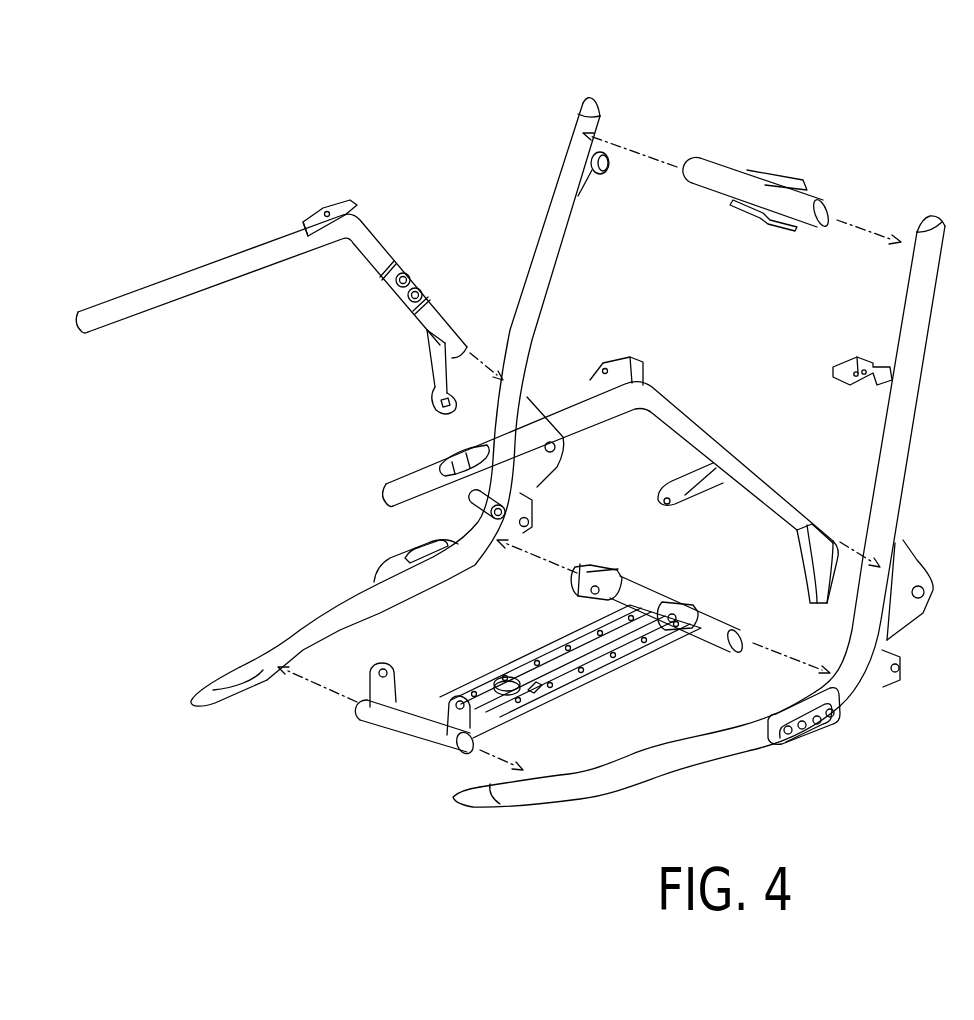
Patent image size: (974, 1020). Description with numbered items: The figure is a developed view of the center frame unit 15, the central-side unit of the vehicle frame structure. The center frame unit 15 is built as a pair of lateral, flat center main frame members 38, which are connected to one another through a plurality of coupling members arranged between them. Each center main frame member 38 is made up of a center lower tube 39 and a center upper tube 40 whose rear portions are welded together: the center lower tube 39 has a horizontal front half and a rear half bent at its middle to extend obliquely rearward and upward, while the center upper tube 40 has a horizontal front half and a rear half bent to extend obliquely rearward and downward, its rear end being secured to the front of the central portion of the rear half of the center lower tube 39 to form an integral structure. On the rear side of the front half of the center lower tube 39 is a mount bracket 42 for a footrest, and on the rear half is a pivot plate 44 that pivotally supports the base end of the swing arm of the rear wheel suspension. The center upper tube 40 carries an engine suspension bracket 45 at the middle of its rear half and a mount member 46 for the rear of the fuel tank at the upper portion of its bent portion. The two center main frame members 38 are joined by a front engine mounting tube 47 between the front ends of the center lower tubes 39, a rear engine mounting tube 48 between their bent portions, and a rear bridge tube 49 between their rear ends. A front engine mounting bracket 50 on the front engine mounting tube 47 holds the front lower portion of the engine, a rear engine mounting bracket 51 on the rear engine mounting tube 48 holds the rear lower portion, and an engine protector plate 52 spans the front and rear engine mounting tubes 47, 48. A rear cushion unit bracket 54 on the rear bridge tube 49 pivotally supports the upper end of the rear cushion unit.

The center frame unit 15 is at (813, 117).
The center main frame member 38 is at (352, 374).
The center lower tube 39 is at (507, 420).
The center upper tube 40 is at (426, 323).
The mount bracket 42 is at (407, 557).
The pivot plate 44 is at (550, 460).
The engine suspension bracket 45 is at (697, 490).
The mount member 46 is at (337, 203).
The front engine mounting tube 47 is at (407, 727).
The rear engine mounting tube 48 is at (717, 637).
The rear bridge tube 49 is at (713, 170).
The front engine mounting bracket 50 is at (453, 707).
The rear engine mounting bracket 51 is at (682, 610).
The engine protector plate 52 is at (555, 692).
The rear cushion unit bracket 54 is at (780, 220).